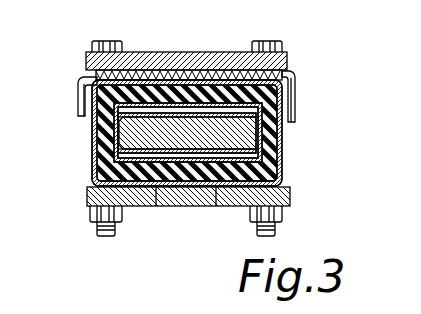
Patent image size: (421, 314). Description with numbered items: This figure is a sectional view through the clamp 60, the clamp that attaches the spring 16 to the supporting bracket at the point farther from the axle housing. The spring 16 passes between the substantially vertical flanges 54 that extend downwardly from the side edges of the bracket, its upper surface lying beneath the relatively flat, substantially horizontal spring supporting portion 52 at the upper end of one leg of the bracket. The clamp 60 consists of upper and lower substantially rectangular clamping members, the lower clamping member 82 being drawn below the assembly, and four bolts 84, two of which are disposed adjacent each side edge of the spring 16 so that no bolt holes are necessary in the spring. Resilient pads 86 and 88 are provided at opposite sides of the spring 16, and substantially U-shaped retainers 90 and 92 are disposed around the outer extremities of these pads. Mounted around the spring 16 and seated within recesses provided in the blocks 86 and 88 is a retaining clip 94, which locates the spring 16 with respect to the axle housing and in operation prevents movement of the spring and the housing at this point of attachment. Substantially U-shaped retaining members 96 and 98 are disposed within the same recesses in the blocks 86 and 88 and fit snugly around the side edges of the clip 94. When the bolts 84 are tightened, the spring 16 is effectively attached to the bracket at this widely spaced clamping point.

The spring 16 is at (282, 126).
The spring supporting portion 52 is at (228, 68).
The flanges 54 is at (80, 90).
The clamp 60 is at (291, 51).
The lower clamping member 82 is at (290, 197).
The bolts 84 is at (283, 230).
The resilient pad 86 is at (93, 125).
The resilient pad 88 is at (102, 176).
The retainer 90 is at (178, 74).
The retainer 92 is at (216, 188).
The retaining clip 94 is at (279, 162).
The retaining member 96 is at (149, 112).
The retaining member 98 is at (157, 188).